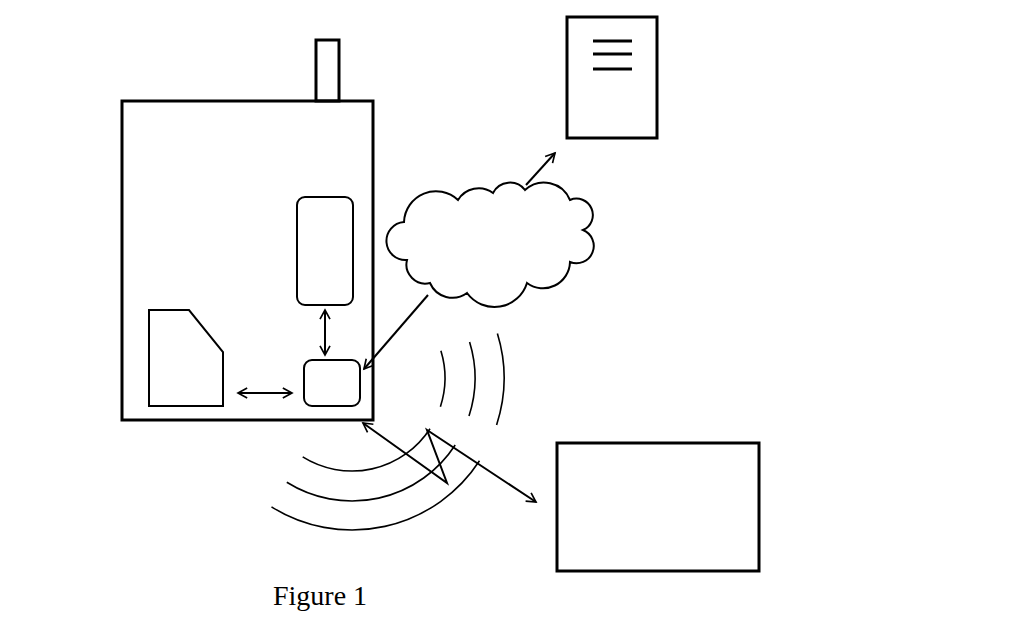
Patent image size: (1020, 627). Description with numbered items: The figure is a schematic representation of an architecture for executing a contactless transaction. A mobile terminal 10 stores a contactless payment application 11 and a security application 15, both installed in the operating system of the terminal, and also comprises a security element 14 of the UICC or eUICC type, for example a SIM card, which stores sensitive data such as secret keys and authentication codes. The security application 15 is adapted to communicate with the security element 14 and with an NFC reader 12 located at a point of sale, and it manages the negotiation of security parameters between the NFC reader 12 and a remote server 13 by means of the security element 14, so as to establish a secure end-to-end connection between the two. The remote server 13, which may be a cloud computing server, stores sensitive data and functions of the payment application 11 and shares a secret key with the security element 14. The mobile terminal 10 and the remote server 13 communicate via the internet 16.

The mobile terminal 10 is at (122, 156).
The payment application 11 is at (298, 205).
The NFC reader 12 is at (760, 477).
The remote server 13 is at (660, 62).
The security element 14 is at (220, 303).
The security application 15 is at (304, 370).
The internet 16 is at (590, 233).